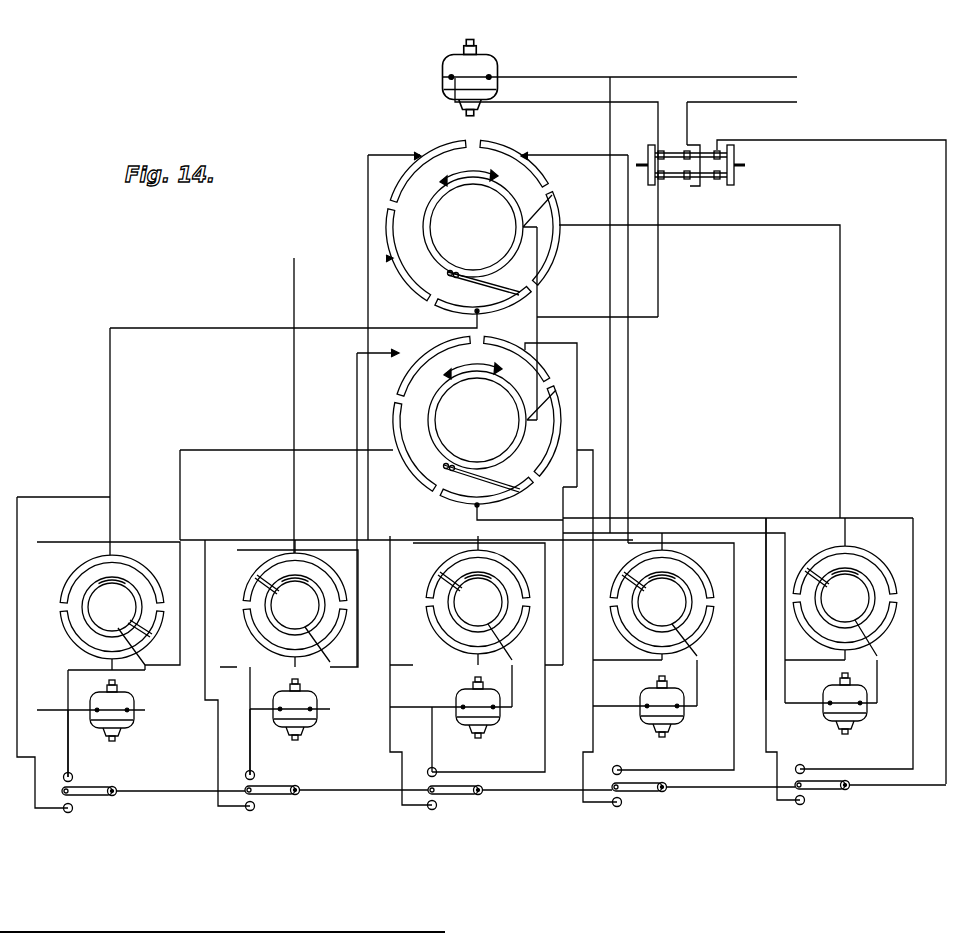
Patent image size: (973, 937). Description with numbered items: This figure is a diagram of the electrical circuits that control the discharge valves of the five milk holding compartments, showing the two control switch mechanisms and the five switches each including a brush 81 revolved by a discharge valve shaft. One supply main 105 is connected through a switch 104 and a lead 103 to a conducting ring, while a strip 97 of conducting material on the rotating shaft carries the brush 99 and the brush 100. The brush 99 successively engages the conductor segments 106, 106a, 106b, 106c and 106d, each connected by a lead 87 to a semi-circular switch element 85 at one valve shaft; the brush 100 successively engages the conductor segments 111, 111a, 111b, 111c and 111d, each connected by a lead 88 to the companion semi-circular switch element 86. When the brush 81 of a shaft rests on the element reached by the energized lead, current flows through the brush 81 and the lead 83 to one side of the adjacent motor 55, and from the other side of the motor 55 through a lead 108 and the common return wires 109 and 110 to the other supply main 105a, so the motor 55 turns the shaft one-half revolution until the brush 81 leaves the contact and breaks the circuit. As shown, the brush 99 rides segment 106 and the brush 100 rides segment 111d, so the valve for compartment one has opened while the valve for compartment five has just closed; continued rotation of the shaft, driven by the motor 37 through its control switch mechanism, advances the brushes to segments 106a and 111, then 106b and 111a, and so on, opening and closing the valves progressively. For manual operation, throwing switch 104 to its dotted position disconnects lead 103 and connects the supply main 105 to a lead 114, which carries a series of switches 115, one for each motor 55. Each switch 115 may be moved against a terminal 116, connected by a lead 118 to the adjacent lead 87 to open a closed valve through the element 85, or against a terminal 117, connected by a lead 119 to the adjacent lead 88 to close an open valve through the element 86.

The motor 37 is at (442, 63).
The supply main 105a is at (686, 80).
The supply main 105 is at (771, 103).
The switch 104 is at (680, 182).
The lead 114 is at (945, 382).
The lead 87 is at (297, 505).
The strip of conducting material 97 is at (543, 298).
The lead 103 is at (660, 297).
The lead 88 is at (583, 376).
The common return wire 110 is at (612, 425).
The common return wire 109 is at (228, 536).
The lead 108 is at (57, 540).
The lead 119 is at (477, 540).
The conductor segment 106 is at (461, 311).
The conductor segment 106a is at (406, 286).
The conductor segment 106b is at (441, 152).
The conductor segment 106c is at (513, 153).
The conductor segment 106d is at (555, 251).
The brush 99 is at (510, 289).
The conductor segment 111 is at (405, 475).
The conductor segment 111a is at (438, 351).
The conductor segment 111b is at (510, 350).
The conductor segment 111c is at (556, 424).
The conductor segment 111d is at (458, 508).
The brush 100 is at (516, 475).
The semi-circular switch element 85 is at (84, 568).
The semi-circular switch element 86 is at (68, 638).
The brush 81 is at (150, 636).
The lead 83 is at (148, 683).
The motor 55 is at (122, 730).
The switch 115 is at (108, 785).
The terminal 116 is at (62, 773).
The terminal 117 is at (66, 812).
The lead 118 is at (882, 776).